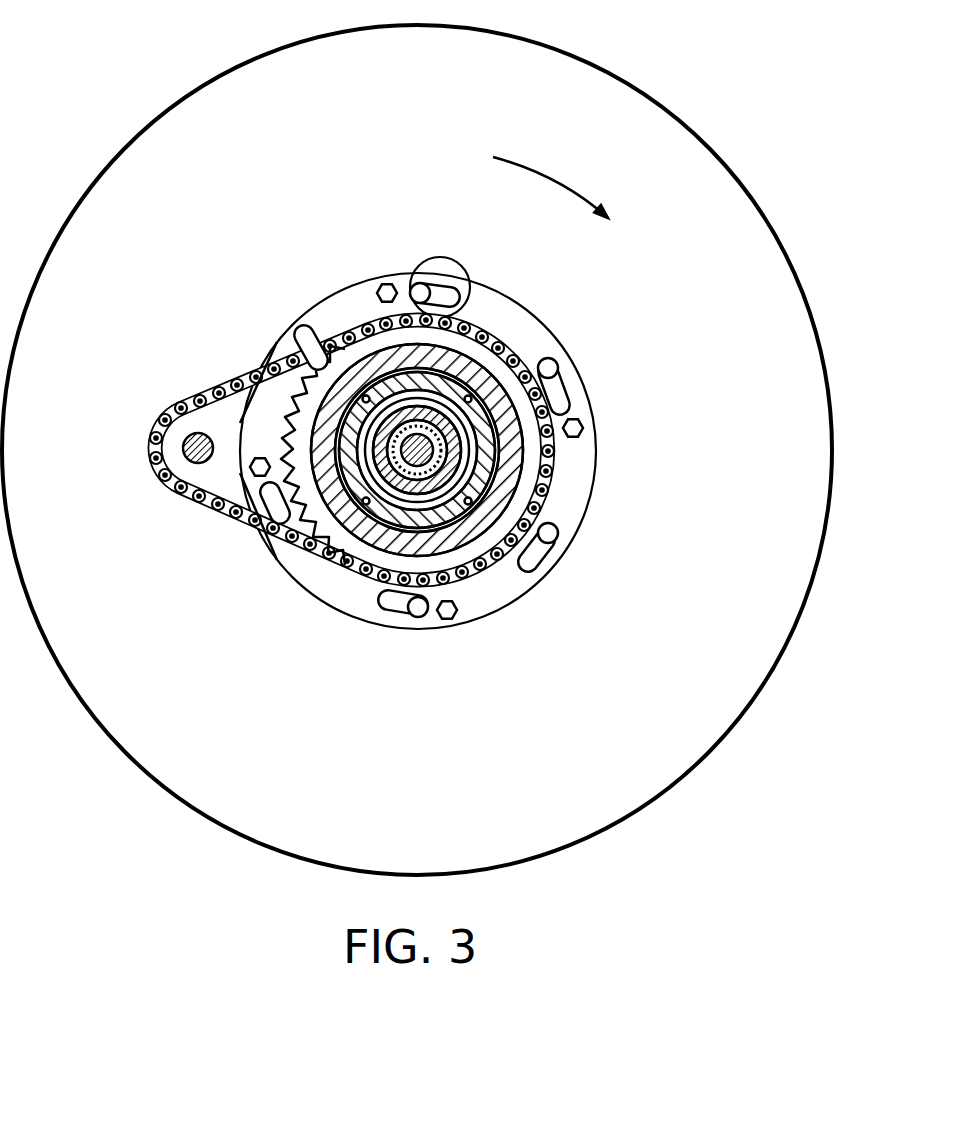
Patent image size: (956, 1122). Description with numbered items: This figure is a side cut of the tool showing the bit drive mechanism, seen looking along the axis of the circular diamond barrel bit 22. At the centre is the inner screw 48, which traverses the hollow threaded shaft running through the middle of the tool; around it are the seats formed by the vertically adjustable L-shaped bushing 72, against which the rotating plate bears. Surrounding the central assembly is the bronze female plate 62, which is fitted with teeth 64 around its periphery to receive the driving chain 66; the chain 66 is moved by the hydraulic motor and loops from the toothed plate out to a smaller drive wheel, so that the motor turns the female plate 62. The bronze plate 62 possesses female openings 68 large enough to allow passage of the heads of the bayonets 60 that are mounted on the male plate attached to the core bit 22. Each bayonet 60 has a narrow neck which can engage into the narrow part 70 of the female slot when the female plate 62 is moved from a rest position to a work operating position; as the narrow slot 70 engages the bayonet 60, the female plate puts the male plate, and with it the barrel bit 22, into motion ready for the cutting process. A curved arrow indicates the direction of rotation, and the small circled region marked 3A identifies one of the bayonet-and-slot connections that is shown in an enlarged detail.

The circular diamond barrel bit 22 is at (643, 142).
The detail view area of FIG. 3A is at (433, 258).
The bronze female plate 62 is at (473, 350).
The bayonets 60 is at (552, 364).
The driving chain 66 is at (227, 380).
The teeth 64 is at (287, 517).
The L-shaped bushing 72 is at (510, 470).
The inner screw 48 is at (467, 487).
The female openings 68 is at (527, 563).
The narrow part of the female slot 70 is at (550, 545).